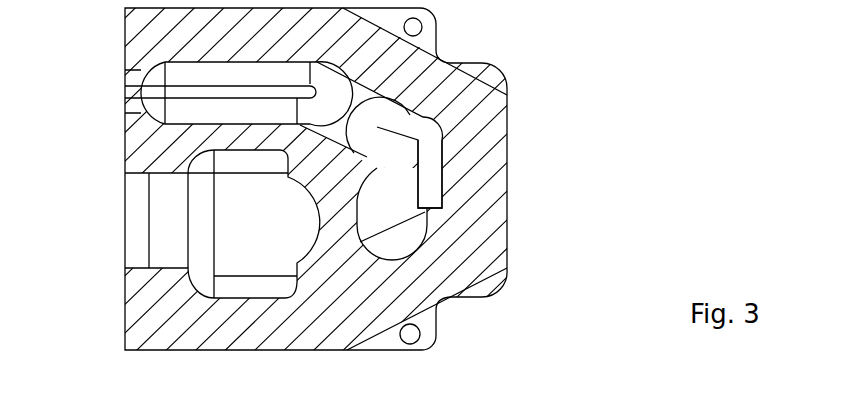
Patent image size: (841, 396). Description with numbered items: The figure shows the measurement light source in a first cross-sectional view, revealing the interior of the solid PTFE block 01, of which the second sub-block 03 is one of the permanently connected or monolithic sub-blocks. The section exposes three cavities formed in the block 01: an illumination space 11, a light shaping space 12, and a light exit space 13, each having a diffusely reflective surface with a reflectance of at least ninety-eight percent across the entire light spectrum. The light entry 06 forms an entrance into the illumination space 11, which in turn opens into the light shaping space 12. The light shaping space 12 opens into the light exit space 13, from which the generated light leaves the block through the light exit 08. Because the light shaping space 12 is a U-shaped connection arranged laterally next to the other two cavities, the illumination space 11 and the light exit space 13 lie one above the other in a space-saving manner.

The block 01 is at (498, 260).
The second sub-block 03 is at (432, 77).
The light entry 06 is at (133, 82).
The light exit 08 is at (140, 230).
The illumination space 11 is at (197, 78).
The light shaping space 12 is at (425, 177).
The light exit space 13 is at (228, 241).